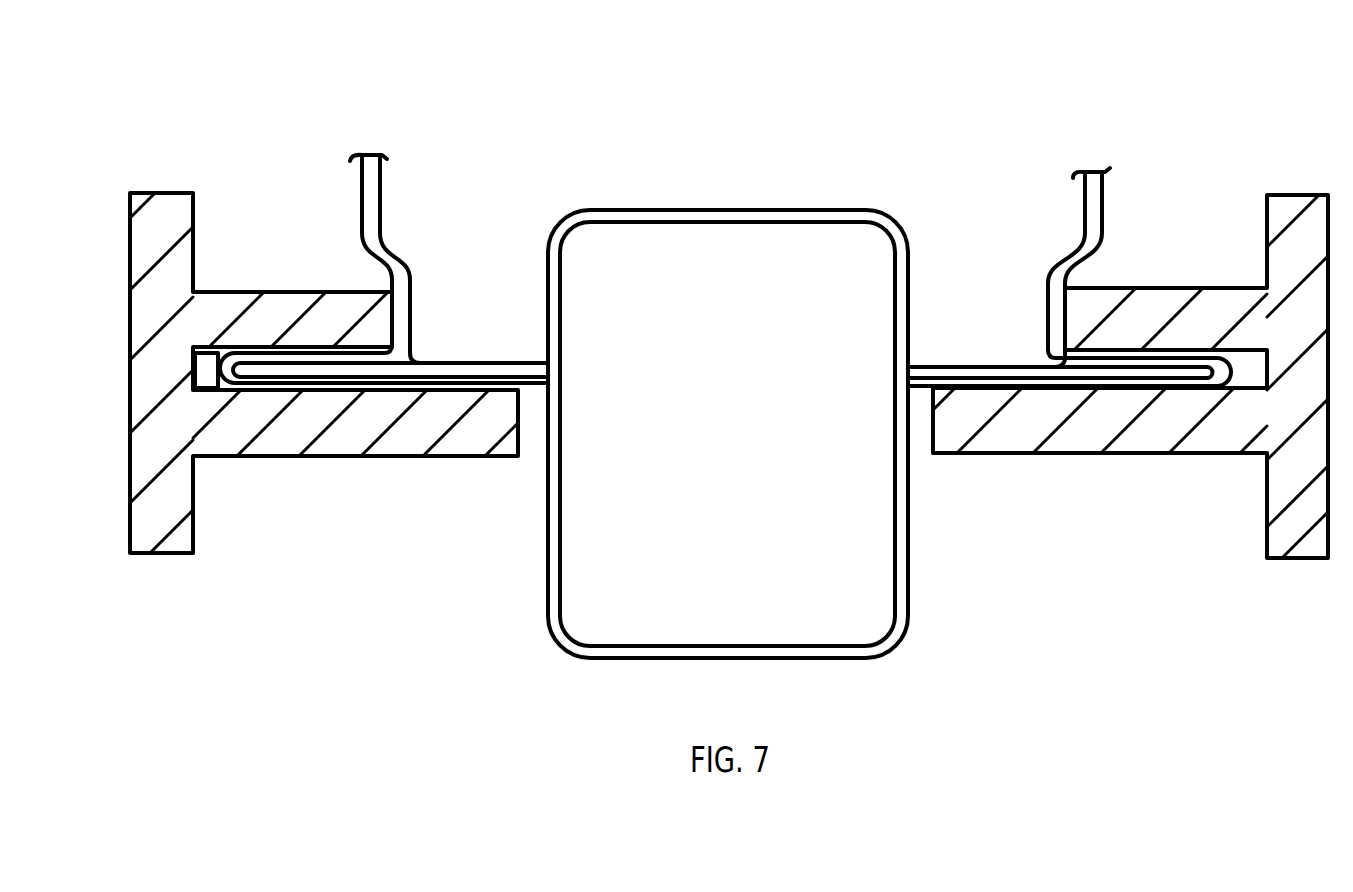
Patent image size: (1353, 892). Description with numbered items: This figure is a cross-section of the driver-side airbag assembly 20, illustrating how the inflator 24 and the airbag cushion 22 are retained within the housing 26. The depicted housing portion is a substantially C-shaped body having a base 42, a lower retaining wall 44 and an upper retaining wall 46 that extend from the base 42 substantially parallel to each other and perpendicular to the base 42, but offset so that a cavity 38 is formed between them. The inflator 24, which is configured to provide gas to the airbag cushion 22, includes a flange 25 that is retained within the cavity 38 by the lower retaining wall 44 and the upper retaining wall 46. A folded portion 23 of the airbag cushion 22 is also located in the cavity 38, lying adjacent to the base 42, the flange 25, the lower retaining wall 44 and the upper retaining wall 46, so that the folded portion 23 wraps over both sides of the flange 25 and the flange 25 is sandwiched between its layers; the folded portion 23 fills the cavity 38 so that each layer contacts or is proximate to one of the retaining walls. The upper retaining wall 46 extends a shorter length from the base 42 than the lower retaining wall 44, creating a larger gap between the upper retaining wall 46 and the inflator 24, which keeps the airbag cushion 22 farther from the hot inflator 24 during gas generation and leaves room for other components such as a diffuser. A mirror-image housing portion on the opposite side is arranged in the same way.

The driver-side airbag assembly 20 is at (1019, 76).
The airbag cushion 22 is at (373, 183).
The folded portion of the airbag cushion 23 is at (412, 351).
The inflator 24 is at (897, 215).
The flange 25 is at (515, 362).
The housing 26 is at (1103, 472).
The cavity 38 is at (204, 373).
The base 42 is at (138, 391).
The lower retaining wall 44 is at (389, 440).
The upper retaining wall 46 is at (273, 302).